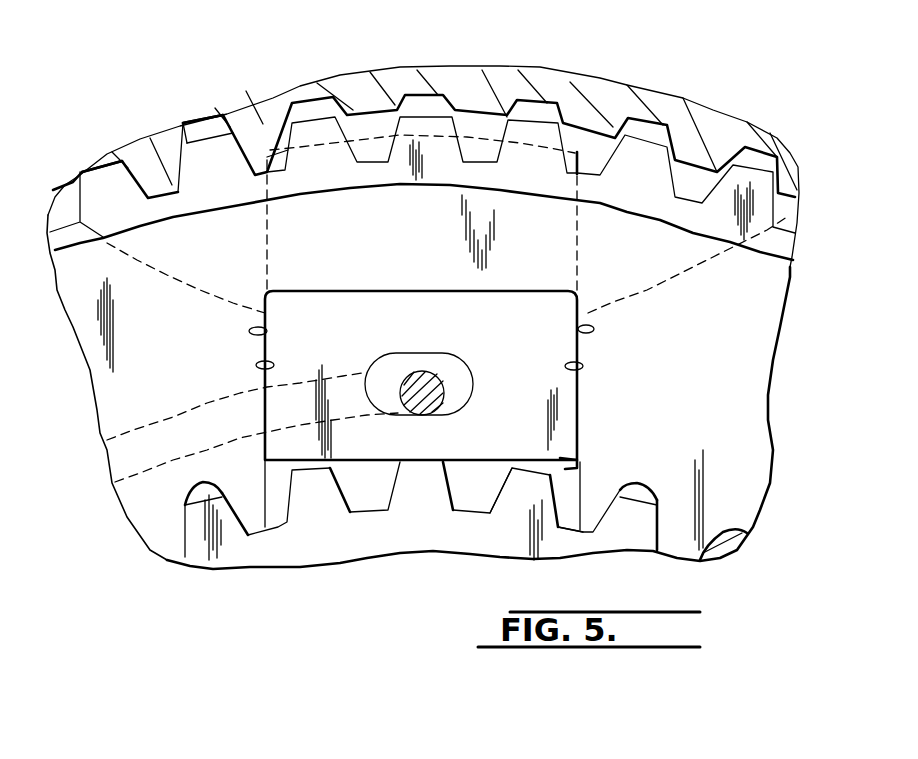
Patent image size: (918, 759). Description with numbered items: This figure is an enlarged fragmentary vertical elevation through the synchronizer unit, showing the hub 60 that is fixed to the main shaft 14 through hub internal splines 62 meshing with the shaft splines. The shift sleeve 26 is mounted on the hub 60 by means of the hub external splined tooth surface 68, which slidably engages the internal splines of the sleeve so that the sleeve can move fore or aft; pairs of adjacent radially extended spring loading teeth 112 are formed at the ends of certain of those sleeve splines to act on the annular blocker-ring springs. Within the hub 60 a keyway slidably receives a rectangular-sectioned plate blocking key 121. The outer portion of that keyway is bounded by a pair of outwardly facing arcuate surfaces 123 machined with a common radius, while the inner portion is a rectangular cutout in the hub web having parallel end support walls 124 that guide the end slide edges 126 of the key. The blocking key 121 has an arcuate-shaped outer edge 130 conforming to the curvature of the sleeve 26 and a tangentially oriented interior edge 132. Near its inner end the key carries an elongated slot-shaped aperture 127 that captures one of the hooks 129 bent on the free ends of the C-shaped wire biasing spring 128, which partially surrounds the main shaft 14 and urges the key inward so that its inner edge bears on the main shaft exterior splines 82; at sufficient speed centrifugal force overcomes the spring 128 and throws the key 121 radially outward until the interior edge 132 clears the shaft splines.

The main shaft 14 is at (563, 548).
The shift sleeve 26 is at (720, 100).
The hub 60 is at (787, 320).
The hub internal splines 62 is at (160, 545).
The hub external splined tooth surface 68 is at (115, 177).
The main shaft exterior splines 82 is at (523, 500).
The spring loading teeth 112 is at (577, 120).
The blocking key 121 is at (375, 466).
The arcuate surfaces 123 is at (184, 281).
The end support walls 124 is at (256, 365).
The end slide edges 126 is at (586, 160).
The slot-shaped aperture 127 is at (443, 408).
The C-shaped wire biasing spring 128 is at (138, 427).
The hooks 129 is at (428, 378).
The arcuate-shaped outer edge 130 is at (372, 135).
The interior edge 132 is at (577, 467).